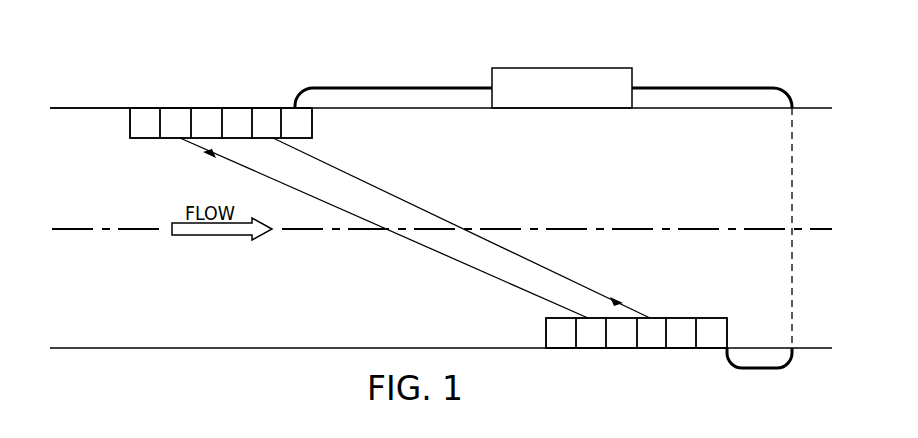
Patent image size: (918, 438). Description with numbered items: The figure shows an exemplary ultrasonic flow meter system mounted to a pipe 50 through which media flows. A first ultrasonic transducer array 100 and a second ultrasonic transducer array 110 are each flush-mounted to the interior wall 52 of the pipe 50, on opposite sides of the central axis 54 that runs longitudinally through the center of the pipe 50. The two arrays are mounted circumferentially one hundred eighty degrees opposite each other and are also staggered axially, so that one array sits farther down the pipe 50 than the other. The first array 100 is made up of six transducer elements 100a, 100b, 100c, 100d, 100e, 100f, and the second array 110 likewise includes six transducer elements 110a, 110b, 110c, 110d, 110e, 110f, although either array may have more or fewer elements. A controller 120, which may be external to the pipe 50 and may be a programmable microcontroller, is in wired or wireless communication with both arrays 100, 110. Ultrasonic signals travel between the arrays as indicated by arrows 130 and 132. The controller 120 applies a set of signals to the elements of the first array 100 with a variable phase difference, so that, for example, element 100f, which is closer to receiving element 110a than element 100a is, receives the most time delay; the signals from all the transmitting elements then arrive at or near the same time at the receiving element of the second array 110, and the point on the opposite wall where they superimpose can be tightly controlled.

The pipe 50 is at (80, 108).
The interior wall 52 is at (102, 112).
The central axis 54 is at (694, 228).
The first ultrasonic transducer array 100 is at (145, 141).
The transducer 100a is at (145, 117).
The transducer 100b is at (175, 117).
The transducer 100c is at (205, 117).
The transducer 100d is at (240, 117).
The transducer 100e is at (270, 117).
The transducer 100f is at (303, 125).
The second ultrasonic transducer array 110 is at (712, 316).
The transducer 110a is at (553, 333).
The transducer 110b is at (592, 342).
The transducer 110c is at (617, 340).
The transducer 110d is at (652, 343).
The transducer 110e is at (680, 328).
The transducer 110f is at (707, 343).
The controller 120 is at (562, 68).
The arrow 130 is at (411, 203).
The arrow 132 is at (441, 258).